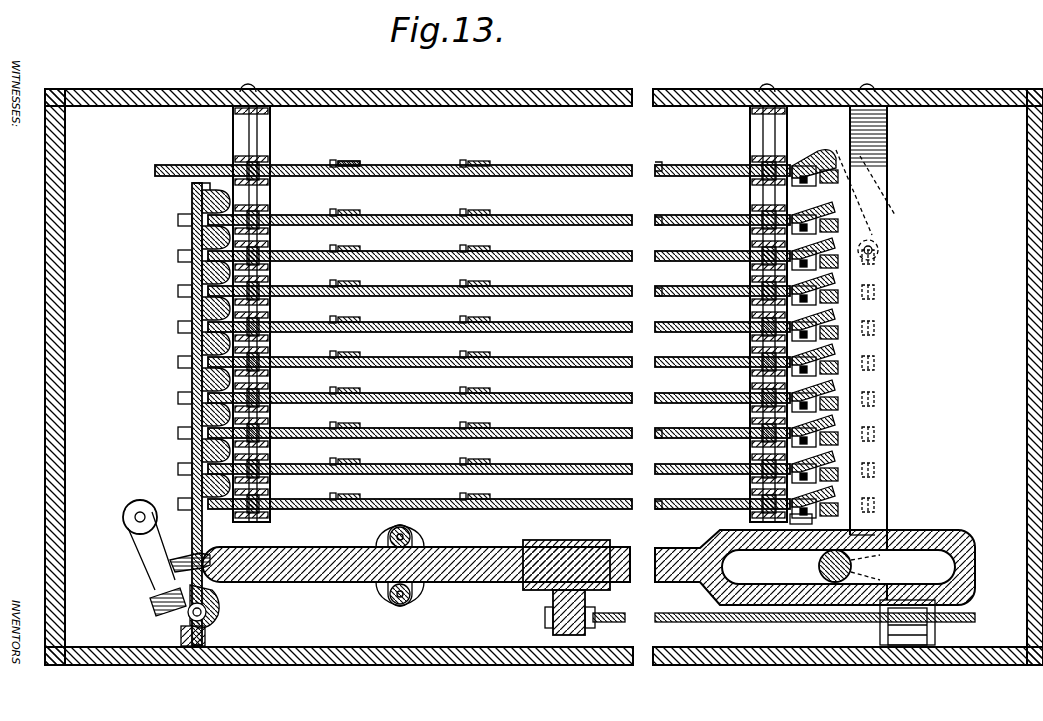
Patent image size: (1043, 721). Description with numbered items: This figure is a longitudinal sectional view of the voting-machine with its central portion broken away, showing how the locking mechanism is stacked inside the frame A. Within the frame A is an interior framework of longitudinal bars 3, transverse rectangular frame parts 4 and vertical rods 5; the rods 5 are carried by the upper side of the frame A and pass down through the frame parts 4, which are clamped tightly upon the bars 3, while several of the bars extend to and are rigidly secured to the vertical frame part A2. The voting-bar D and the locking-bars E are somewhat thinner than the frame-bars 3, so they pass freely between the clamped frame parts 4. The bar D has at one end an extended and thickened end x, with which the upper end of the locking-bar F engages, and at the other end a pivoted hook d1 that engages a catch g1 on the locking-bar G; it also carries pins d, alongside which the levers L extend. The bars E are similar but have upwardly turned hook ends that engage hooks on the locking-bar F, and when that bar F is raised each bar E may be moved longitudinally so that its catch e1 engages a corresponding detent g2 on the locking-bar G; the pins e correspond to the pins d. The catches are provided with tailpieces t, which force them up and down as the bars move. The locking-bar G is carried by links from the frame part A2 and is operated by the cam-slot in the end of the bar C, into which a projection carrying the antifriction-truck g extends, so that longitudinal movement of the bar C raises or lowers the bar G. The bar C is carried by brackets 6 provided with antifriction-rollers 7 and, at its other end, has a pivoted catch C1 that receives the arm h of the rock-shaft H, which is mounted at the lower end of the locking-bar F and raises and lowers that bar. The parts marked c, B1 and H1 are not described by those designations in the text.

The frame A is at (155, 90).
The transverse rectangular frame part 4 is at (240, 132).
The vertical rod 5 is at (260, 132).
The locking-bar D is at (155, 172).
The extended and thickened end x is at (190, 183).
The locking-bar F is at (192, 235).
The longitudinal bar 3 is at (178, 255).
The locking-bar E is at (555, 228).
The pin d is at (340, 160).
The pin e is at (335, 208).
The lever L is at (358, 160).
The pivoted hook d1 is at (812, 158).
The catch g1 is at (840, 176).
The catch e1 is at (910, 427).
The detent g2 is at (840, 224).
The locking-bar G is at (855, 270).
The vertical frame part A2 is at (875, 132).
The bar C is at (498, 582).
The antifriction-roller 7 is at (390, 534).
The bracket 6 is at (415, 540).
The stem c is at (553, 630).
The bar B1 is at (798, 632).
The antifriction-truck g is at (820, 566).
The tailpiece t is at (801, 524).
The roller H1 is at (148, 552).
The pivoted catch C1 is at (185, 552).
The rock-shaft H is at (212, 612).
The arm h is at (152, 608).